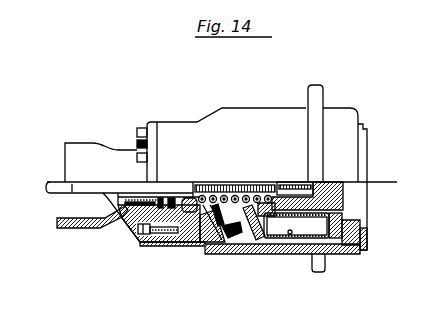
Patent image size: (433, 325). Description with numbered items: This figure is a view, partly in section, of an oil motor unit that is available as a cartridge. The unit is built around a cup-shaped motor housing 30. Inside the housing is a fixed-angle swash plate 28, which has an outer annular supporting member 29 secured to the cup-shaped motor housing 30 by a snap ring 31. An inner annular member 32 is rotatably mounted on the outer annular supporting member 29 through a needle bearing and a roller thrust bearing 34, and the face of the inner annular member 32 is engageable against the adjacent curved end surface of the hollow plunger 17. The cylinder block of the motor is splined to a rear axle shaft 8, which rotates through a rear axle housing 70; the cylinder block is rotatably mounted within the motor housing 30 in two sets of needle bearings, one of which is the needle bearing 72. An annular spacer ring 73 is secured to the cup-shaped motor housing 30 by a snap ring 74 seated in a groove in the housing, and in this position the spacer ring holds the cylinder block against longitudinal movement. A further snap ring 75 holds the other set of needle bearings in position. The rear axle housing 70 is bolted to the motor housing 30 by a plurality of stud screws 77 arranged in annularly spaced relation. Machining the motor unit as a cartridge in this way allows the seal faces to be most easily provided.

The rear axle shaft 8 is at (57, 198).
The rear axle housing 70 is at (74, 229).
The needle bearing 72 is at (127, 224).
The stud screw 77 is at (142, 236).
The fixed-angle swash plate 28 is at (200, 243).
The cup-shaped motor housing 30 is at (213, 245).
The outer annular supporting member 29 is at (216, 252).
The snap ring 31 is at (228, 250).
The roller thrust bearing 34 is at (235, 250).
The inner annular member 32 is at (256, 254).
The hollow plunger 17 is at (289, 255).
The annular spacer ring 73 is at (350, 256).
The snap ring 74 is at (358, 254).
The snap ring 75 is at (364, 235).